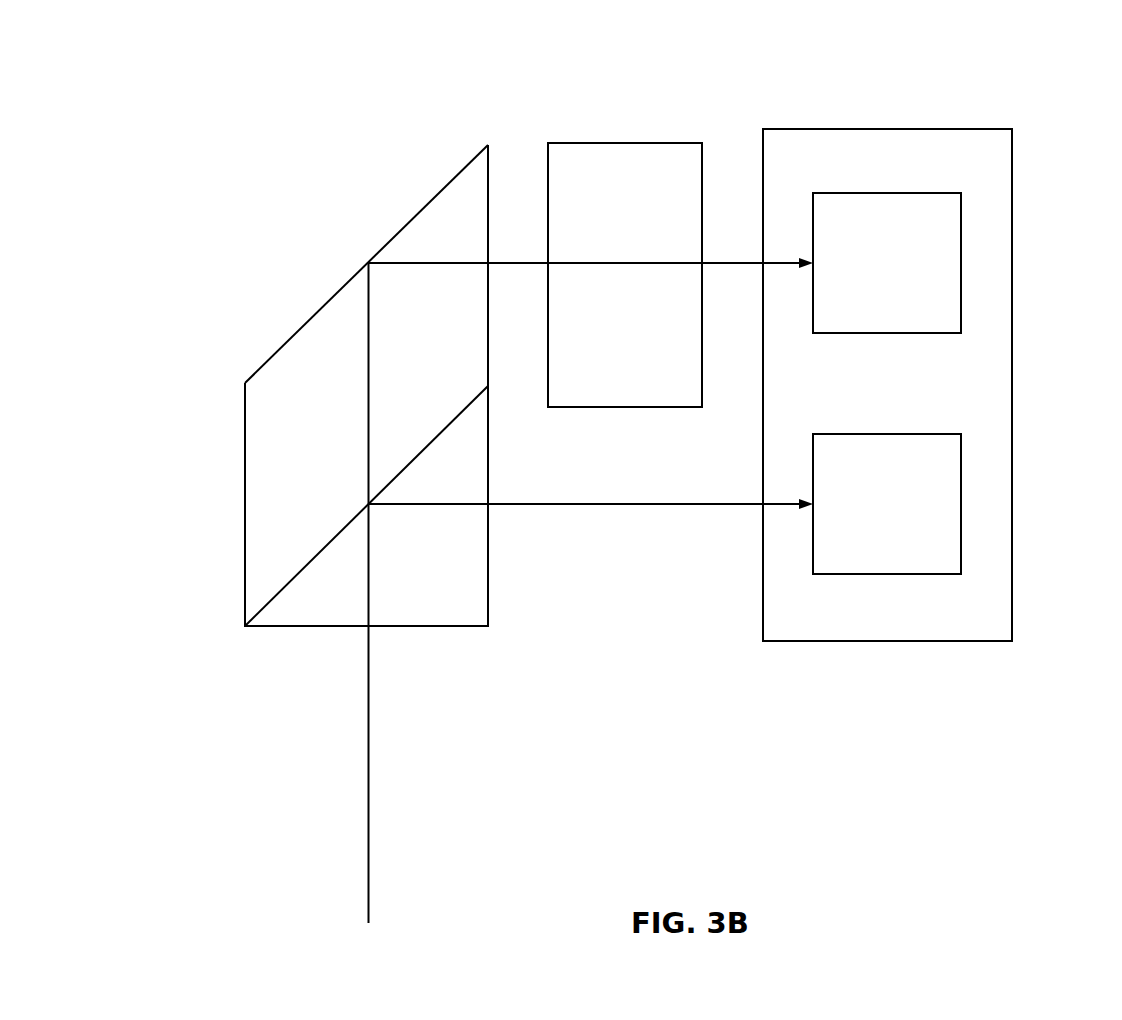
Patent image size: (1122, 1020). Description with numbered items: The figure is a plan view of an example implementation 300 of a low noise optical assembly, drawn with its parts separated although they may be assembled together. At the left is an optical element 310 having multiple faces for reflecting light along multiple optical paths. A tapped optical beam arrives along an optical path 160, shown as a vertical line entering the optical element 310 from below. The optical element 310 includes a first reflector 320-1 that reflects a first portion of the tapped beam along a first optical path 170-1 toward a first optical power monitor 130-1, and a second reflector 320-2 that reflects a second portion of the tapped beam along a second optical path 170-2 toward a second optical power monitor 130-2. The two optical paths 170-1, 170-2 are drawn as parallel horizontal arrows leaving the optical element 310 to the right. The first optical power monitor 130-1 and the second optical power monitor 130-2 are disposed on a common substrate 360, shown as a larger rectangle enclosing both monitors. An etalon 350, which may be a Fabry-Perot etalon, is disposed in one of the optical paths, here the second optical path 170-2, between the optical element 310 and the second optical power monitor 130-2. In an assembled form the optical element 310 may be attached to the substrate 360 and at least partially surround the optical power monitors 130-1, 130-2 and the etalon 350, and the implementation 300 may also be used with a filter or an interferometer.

The example implementation 300 is at (200, 38).
The optical element 310 is at (458, 142).
The first reflector 320-1 is at (366, 506).
The second reflector 320-2 is at (366, 264).
The optical path 160 is at (368, 790).
The first optical path 170-1 is at (591, 518).
The second optical path 170-2 is at (591, 278).
The etalon 350 is at (626, 143).
The substrate 360 is at (888, 129).
The first optical power monitor 130-1 is at (961, 504).
The second optical power monitor 130-2 is at (961, 263).